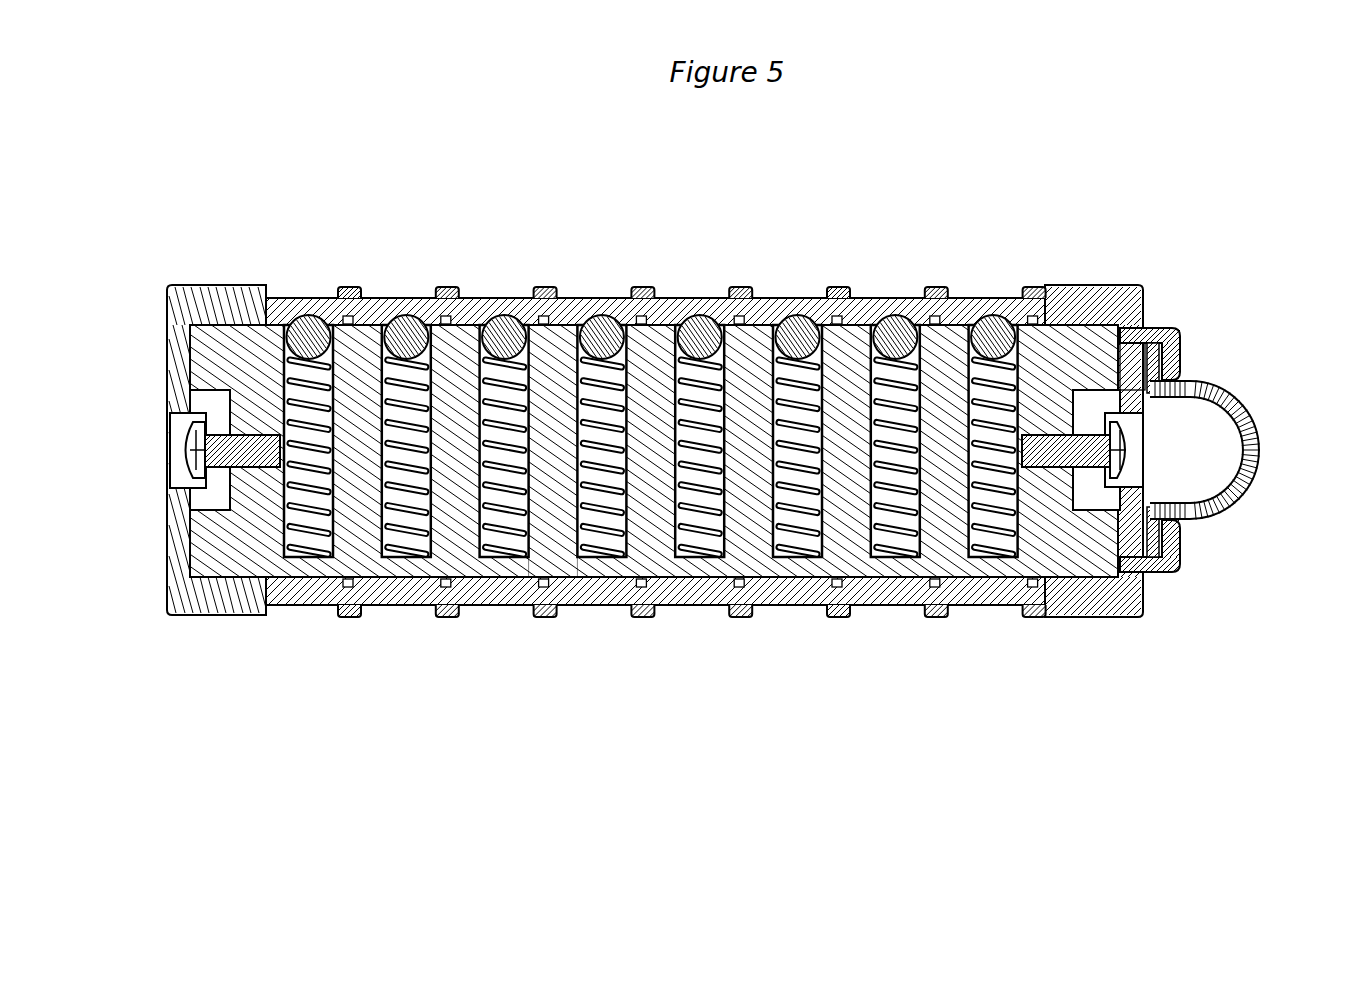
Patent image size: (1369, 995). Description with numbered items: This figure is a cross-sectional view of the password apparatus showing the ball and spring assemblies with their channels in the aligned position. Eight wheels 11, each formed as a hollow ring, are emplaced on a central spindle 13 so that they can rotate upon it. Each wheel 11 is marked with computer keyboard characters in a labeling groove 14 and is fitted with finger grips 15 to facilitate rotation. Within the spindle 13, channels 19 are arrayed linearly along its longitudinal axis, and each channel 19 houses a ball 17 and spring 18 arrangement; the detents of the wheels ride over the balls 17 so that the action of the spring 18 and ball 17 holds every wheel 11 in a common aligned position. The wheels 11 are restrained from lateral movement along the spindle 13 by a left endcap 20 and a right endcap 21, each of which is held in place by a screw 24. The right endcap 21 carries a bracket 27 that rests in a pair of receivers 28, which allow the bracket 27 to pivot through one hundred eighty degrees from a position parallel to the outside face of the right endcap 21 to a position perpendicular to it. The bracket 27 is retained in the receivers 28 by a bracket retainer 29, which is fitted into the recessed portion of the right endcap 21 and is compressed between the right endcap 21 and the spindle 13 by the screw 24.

The wheel 11 is at (656, 477).
The central spindle 13 is at (455, 558).
The labeling groove 14 is at (492, 295).
The finger grip 15 is at (832, 625).
The ball 17 is at (807, 325).
The spring 18 is at (317, 518).
The channel 19 is at (537, 505).
The left endcap 20 is at (183, 310).
The right endcap 21 is at (1080, 602).
The screw 24 is at (173, 445).
The bracket 27 is at (1218, 512).
The receiver 28 is at (1182, 337).
The bracket retainer 29 is at (1133, 360).